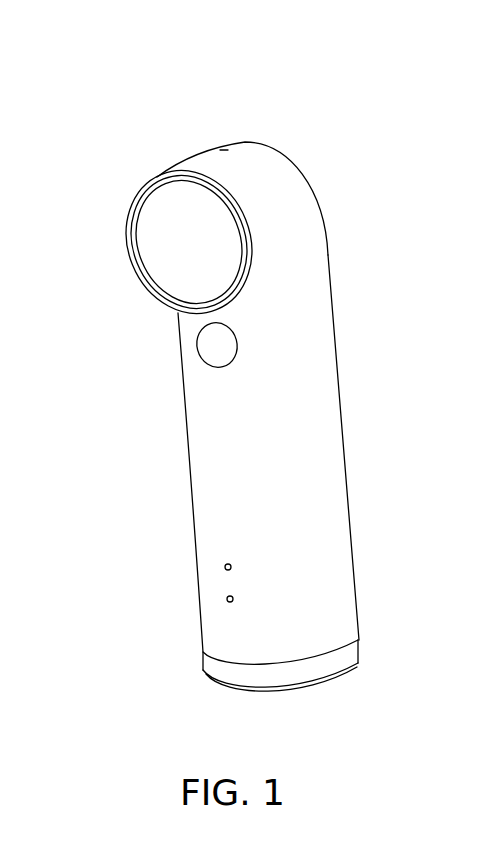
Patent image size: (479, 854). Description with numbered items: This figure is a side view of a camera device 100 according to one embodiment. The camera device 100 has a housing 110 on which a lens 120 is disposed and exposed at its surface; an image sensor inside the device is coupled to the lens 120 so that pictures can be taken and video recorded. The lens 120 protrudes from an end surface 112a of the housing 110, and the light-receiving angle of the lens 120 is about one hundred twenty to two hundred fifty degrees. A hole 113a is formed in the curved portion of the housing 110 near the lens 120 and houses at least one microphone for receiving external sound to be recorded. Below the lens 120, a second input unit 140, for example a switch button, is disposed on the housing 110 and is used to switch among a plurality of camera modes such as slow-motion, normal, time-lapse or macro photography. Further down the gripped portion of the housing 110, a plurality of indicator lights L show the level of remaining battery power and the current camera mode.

The camera device 100 is at (330, 142).
The housing 110 is at (315, 458).
The end surface 112a is at (250, 253).
The hole 113a is at (223, 150).
The lens 120 is at (175, 257).
The second input unit 140 is at (213, 347).
The indicator lights L is at (225, 568).